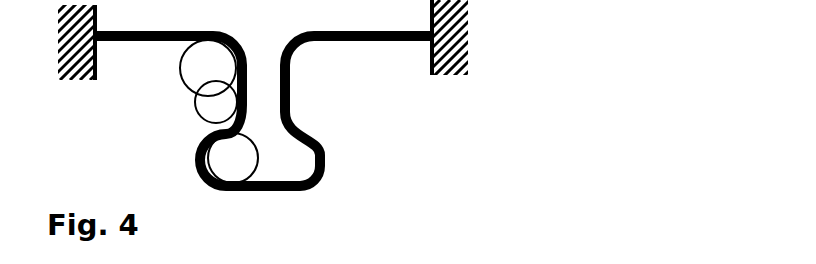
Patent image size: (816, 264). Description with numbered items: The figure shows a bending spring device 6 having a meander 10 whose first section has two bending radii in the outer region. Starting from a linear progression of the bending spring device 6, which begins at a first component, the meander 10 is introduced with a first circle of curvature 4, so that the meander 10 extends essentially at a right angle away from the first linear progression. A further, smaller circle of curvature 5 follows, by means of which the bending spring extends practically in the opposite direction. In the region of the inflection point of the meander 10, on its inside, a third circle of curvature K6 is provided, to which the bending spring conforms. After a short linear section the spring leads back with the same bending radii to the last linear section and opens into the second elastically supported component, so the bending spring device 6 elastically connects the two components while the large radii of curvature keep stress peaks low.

The bending spring device 6 is at (335, 135).
The meander 10 is at (315, 183).
The circle of curvature K4 4 is at (181, 68).
The circle of curvature K5 5 is at (200, 118).
The third circle of curvature K6 is at (233, 162).